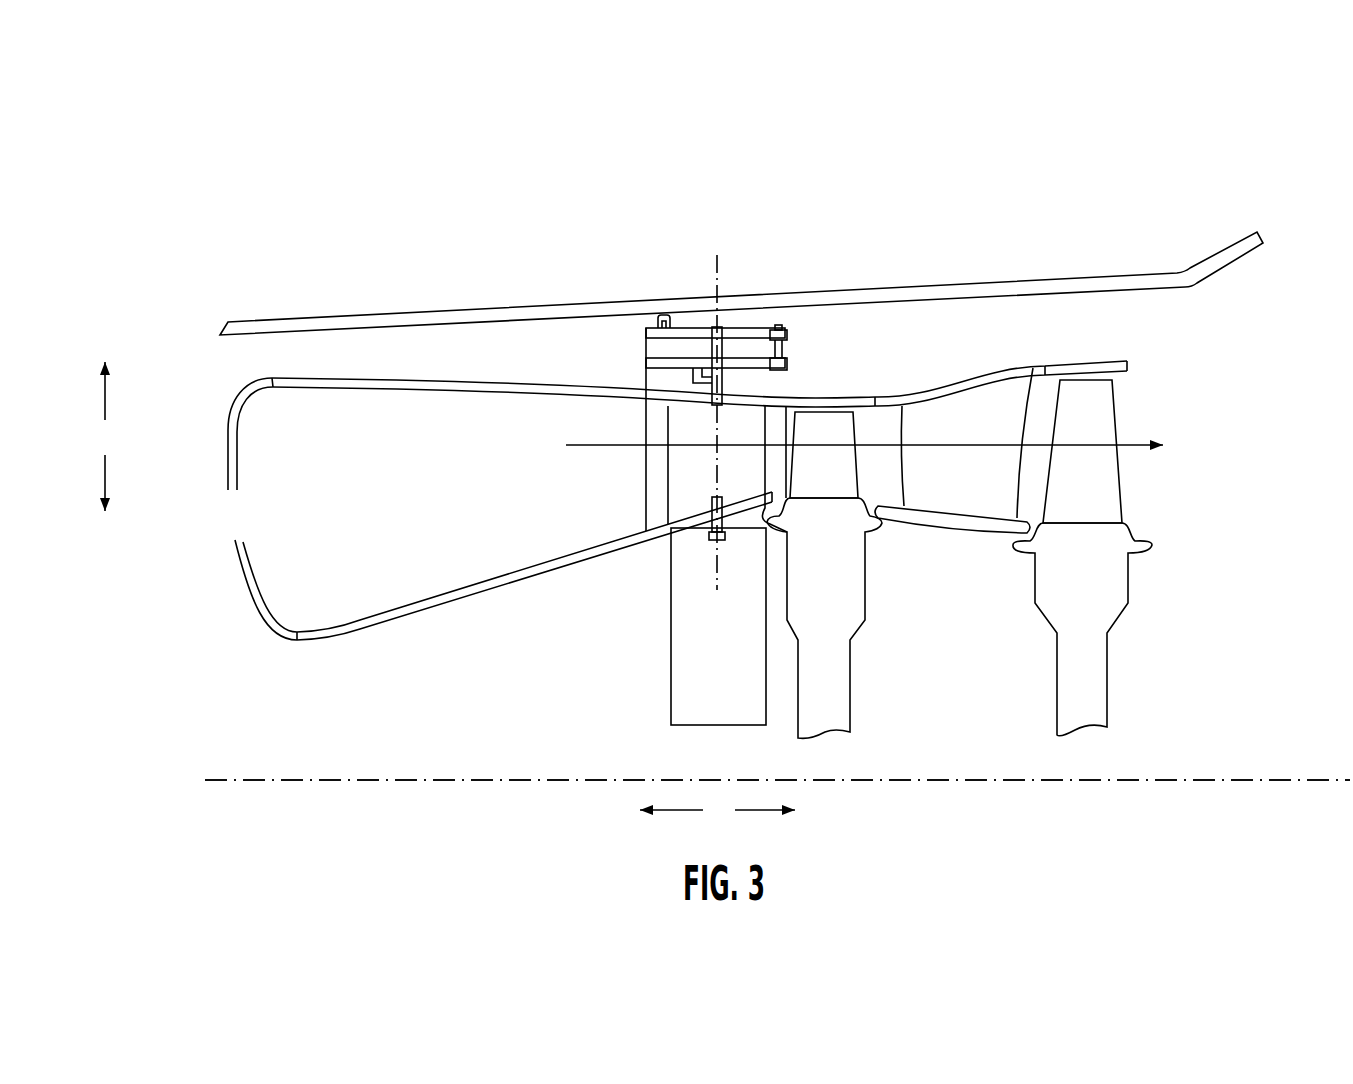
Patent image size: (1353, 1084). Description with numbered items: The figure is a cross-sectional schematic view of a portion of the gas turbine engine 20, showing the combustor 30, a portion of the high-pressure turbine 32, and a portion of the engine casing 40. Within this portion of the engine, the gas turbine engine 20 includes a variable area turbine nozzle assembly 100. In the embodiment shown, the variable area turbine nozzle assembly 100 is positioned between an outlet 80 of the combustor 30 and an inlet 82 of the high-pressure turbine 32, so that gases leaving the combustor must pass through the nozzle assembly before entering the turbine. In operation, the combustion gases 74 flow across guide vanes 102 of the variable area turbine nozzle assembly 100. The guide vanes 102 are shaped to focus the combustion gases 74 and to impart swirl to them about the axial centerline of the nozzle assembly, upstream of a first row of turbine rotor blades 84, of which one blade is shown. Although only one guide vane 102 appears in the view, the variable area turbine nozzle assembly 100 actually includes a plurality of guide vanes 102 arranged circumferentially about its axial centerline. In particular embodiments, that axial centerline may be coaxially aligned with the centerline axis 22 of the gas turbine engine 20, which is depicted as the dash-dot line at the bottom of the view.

The gas turbine engine 20 is at (957, 140).
The centerline axis 22 is at (345, 778).
The combustor 30 is at (552, 343).
The high-pressure turbine 32 is at (966, 350).
The engine casing 40 is at (376, 312).
The combustion gases 74 is at (566, 446).
The outlet 80 is at (636, 481).
The inlet 82 is at (777, 472).
The turbine rotor blades 84 is at (838, 480).
The variable area turbine nozzle assembly 100 is at (766, 318).
The guide vanes 102 is at (660, 427).